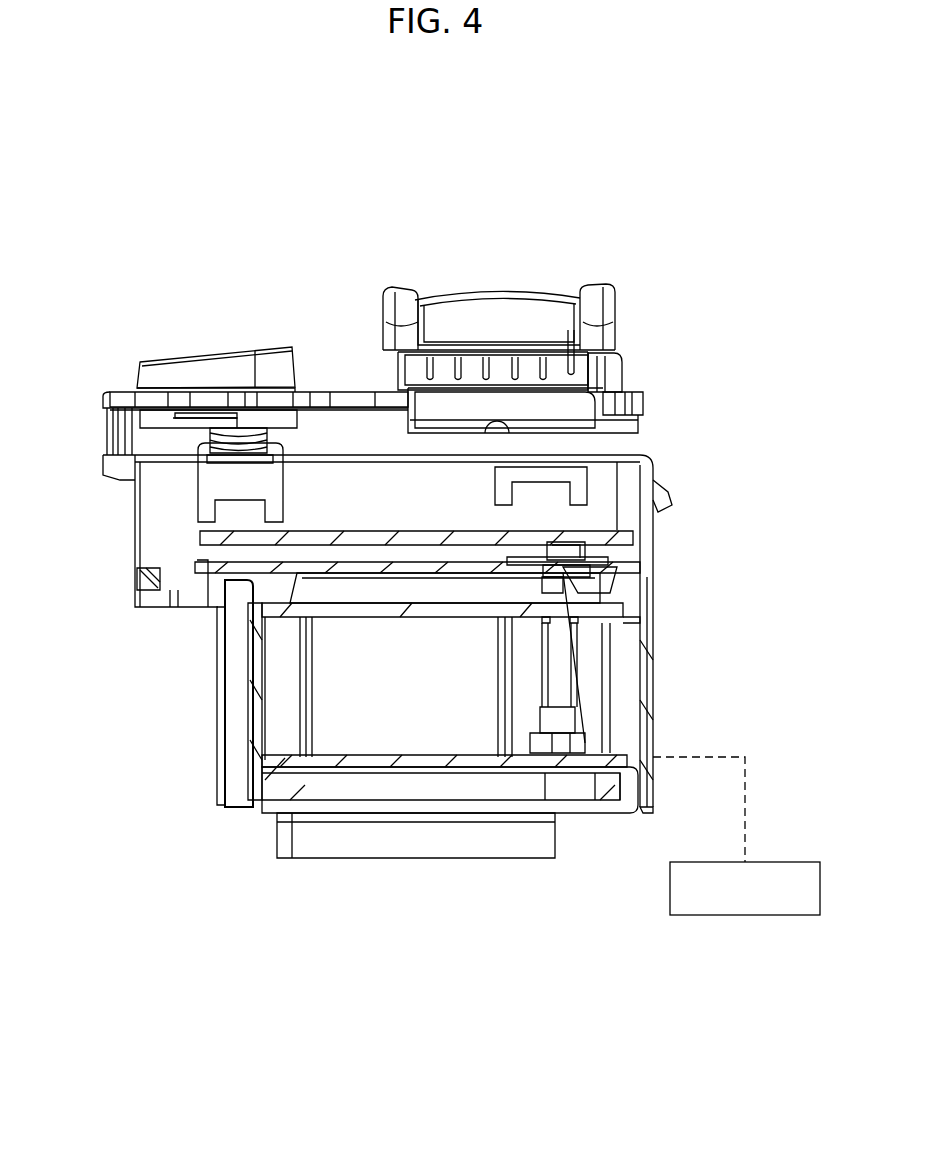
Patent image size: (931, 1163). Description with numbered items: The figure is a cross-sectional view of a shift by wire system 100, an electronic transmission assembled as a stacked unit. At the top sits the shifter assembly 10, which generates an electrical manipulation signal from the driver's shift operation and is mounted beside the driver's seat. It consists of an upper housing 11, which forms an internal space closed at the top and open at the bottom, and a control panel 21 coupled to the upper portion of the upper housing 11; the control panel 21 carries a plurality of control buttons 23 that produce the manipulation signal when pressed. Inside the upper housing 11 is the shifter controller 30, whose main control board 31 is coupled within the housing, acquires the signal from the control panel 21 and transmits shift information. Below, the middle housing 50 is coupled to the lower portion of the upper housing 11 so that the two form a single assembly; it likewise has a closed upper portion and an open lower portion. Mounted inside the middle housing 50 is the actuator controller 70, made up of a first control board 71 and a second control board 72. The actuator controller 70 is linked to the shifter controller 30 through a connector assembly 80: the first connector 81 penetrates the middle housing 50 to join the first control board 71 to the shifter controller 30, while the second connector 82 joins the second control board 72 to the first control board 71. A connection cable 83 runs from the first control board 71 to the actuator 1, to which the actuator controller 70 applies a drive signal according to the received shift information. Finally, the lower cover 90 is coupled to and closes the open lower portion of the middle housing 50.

The shift by wire system 100 is at (419, 185).
The control buttons 23 is at (500, 290).
The control panel 21 is at (640, 356).
The shifter assembly 10 is at (743, 352).
The upper housing 11 is at (660, 466).
The main control board 31 is at (327, 531).
The shifter controller 30 is at (215, 547).
The first connector 81 is at (585, 547).
The connector assembly 80 is at (733, 642).
The second connector 82 is at (588, 740).
The first control board 71 is at (347, 623).
The actuator controller 70 is at (118, 655).
The second control board 72 is at (350, 752).
The middle housing 50 is at (658, 697).
The connection cable 83 is at (745, 802).
The lower cover 90 is at (583, 820).
The actuator 1 is at (745, 915).